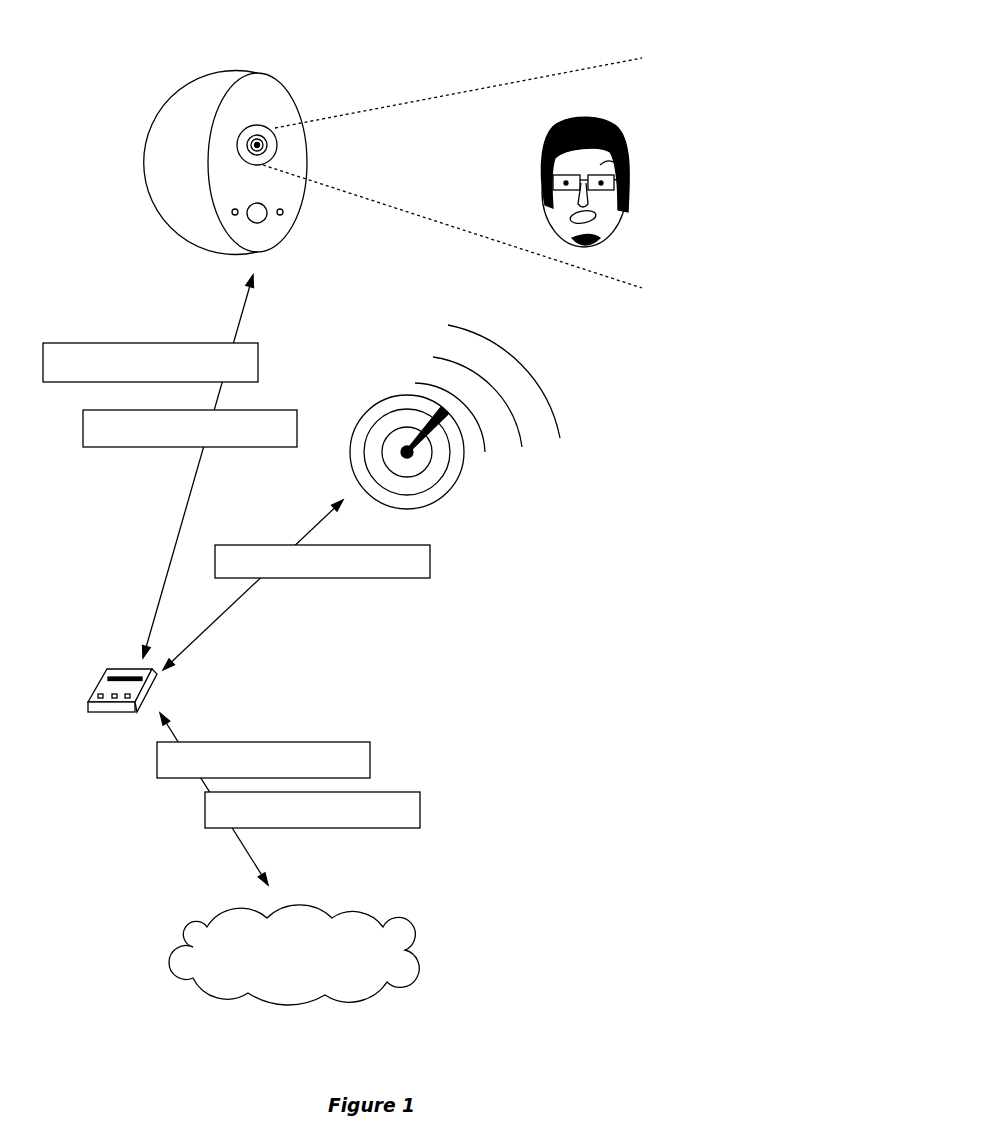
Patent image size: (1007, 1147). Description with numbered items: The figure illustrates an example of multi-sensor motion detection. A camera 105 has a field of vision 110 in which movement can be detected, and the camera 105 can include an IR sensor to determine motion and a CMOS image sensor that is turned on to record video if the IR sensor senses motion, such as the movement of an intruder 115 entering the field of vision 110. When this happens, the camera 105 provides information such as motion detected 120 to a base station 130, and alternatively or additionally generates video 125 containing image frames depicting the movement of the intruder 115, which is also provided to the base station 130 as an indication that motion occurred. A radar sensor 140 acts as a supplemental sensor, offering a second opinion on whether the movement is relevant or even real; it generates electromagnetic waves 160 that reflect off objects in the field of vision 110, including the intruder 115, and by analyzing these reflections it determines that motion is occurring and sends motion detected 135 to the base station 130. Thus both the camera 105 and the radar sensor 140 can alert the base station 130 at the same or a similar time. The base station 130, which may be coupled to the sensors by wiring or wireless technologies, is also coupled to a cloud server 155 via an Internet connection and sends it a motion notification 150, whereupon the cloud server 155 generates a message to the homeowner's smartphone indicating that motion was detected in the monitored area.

The camera 105 is at (210, 83).
The field of vision 110 is at (613, 62).
The intruder 115 is at (637, 132).
The motion detected 120 is at (190, 428).
The video 125 is at (206, 560).
The base station 130 is at (105, 668).
The motion detected 135 is at (322, 561).
The radar sensor 140 is at (363, 422).
The motion notification 150 is at (312, 810).
The cloud server 155 is at (294, 955).
The electromagnetic waves 160 is at (558, 383).